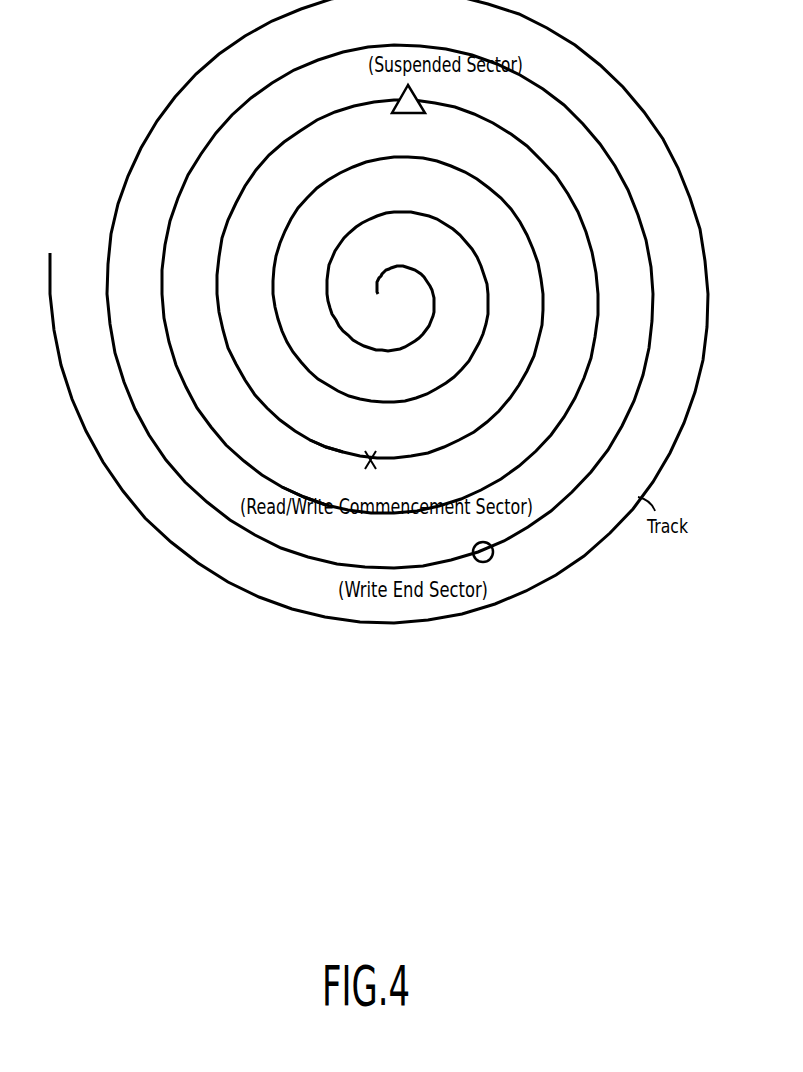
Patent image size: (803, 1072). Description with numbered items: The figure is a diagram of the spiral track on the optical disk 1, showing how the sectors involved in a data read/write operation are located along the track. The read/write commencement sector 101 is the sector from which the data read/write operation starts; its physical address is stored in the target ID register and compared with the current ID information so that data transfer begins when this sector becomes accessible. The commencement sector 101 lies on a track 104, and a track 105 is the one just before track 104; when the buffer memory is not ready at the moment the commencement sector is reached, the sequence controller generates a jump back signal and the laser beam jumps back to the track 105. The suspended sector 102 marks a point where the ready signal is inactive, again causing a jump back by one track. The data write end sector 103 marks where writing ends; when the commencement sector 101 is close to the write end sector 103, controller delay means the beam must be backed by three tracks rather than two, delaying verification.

The disk 1 is at (638, 643).
The read/write commencement sector 101 is at (370, 469).
The suspended sector 102 is at (427, 102).
The data write end sector 103 is at (494, 553).
The track 104 is at (305, 441).
The track 105 is at (328, 394).